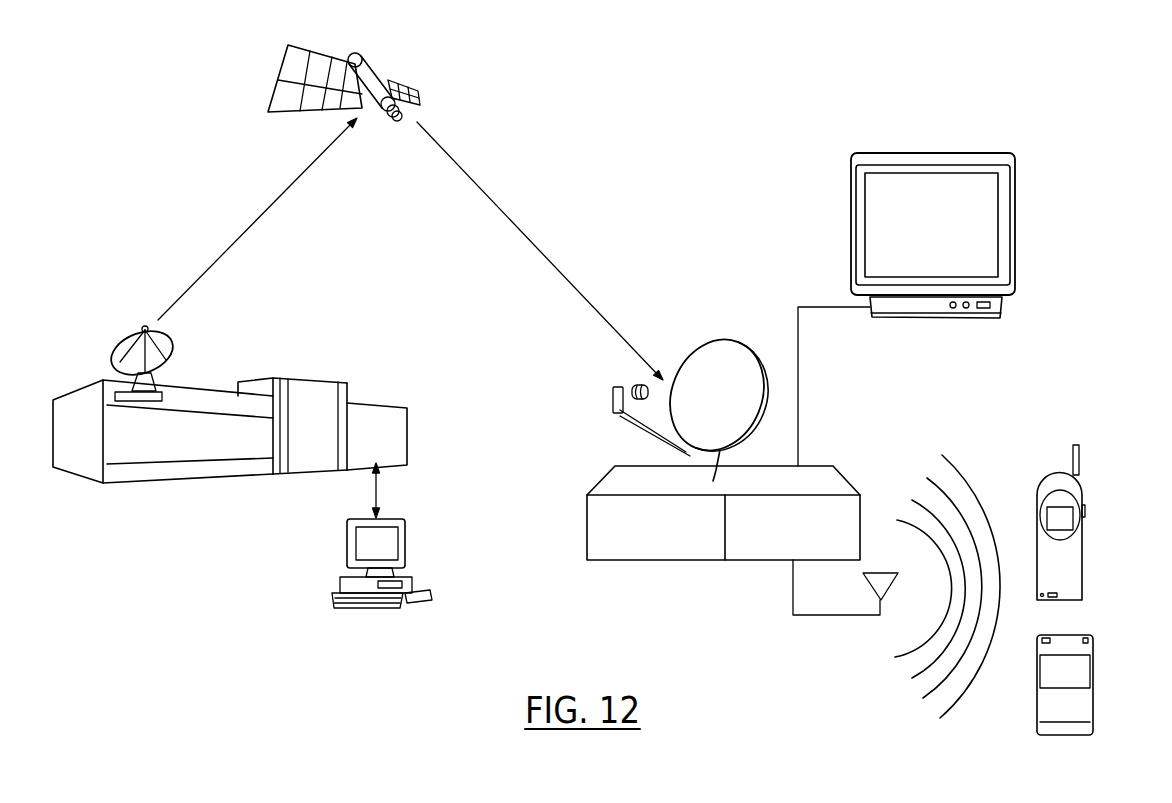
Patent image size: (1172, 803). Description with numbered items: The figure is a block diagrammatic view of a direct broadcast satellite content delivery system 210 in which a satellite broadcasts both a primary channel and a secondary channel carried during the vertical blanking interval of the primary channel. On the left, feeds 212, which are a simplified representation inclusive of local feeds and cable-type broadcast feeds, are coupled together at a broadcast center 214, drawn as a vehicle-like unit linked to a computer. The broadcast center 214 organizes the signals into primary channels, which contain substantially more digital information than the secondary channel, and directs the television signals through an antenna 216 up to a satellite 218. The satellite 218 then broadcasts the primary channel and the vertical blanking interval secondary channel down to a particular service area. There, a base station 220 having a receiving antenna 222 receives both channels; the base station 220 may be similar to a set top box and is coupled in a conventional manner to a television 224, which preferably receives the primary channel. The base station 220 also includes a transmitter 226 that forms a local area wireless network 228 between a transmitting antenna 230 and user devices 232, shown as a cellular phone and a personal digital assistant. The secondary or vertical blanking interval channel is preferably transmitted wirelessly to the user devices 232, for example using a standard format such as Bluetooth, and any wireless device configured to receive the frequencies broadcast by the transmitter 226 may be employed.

The direct broadcast satellite system 210 is at (160, 80).
The feeds 212 is at (407, 547).
The broadcast center 214 is at (408, 422).
The antenna 216 is at (116, 343).
The satellite 218 is at (372, 70).
The base station 220 is at (585, 518).
The receiving antenna 222 is at (725, 337).
The television 224 is at (925, 320).
The transmitter 226 is at (865, 500).
The local area wireless network 228 is at (838, 662).
The transmitting antenna 230 is at (882, 572).
The user devices 232 is at (1082, 587).